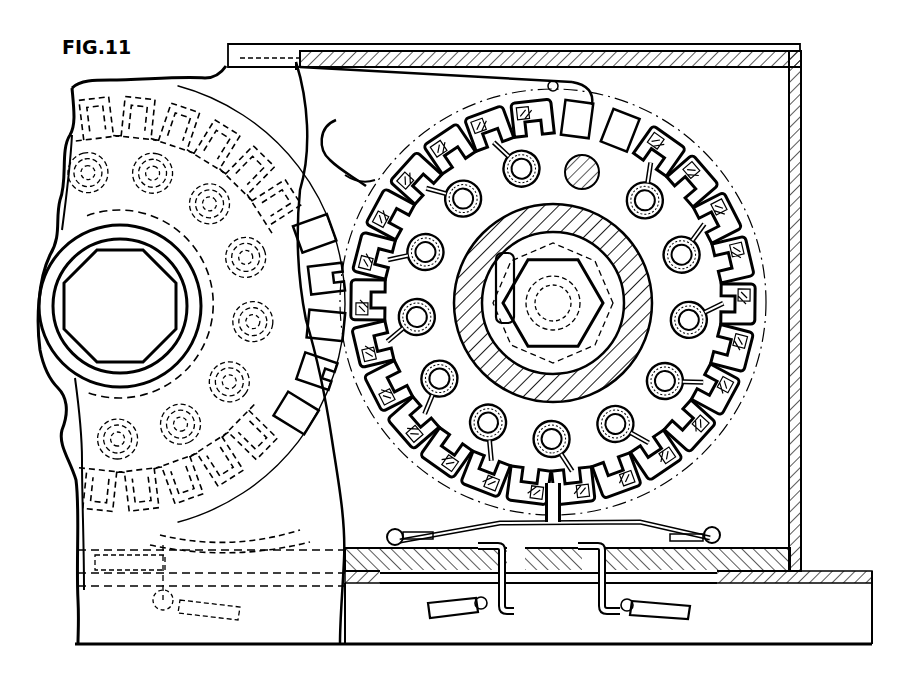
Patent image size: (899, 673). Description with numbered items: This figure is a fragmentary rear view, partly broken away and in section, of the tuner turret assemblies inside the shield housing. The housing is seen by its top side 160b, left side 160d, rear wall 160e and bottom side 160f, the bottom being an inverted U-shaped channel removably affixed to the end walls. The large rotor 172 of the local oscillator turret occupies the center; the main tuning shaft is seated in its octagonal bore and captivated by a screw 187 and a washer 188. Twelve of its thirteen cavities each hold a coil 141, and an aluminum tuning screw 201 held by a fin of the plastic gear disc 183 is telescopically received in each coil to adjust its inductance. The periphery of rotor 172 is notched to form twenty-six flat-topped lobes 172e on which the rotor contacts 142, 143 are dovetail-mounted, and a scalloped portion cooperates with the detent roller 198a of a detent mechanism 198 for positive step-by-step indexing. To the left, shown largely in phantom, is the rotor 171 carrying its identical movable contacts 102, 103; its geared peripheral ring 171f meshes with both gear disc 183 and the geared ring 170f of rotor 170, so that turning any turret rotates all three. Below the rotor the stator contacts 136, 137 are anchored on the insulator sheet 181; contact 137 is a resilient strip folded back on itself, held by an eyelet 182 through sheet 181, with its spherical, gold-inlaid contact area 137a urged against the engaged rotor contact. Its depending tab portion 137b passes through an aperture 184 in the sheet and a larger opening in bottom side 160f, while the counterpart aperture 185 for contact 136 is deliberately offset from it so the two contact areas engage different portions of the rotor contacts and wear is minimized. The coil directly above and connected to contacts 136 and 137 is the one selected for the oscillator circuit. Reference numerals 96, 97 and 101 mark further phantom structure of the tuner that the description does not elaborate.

The frame base 96 is at (78, 556).
The phantom lever 97 is at (203, 528).
The roller 101 is at (240, 196).
The movable contact 102 is at (282, 150).
The movable contact 103 is at (300, 182).
The stator contact 136 is at (462, 620).
The stator contact 137 is at (660, 600).
The contact area 137a is at (560, 620).
The depending tab portion 137b is at (645, 620).
The coil 141 is at (480, 197).
The rotor contact 142 is at (445, 128).
The rotor contact 143 is at (410, 172).
The top side 160b is at (680, 58).
The left side 160d is at (801, 430).
The rear wall 160e is at (306, 96).
The bottom side 160f is at (776, 585).
The rotor 170 is at (345, 656).
The peripheral ring 170f is at (332, 656).
The rotor 171 is at (250, 150).
The peripheral ring 171f is at (302, 412).
The rotor 172 is at (430, 170).
The lobes 172e is at (812, 250).
The insulator sheet 181 is at (801, 560).
The eyelet 182 is at (716, 528).
The plastic gear disc 183 is at (365, 183).
The aperture 184 is at (604, 614).
The aperture 185 is at (502, 614).
The screw 187 is at (588, 288).
The washer 188 is at (606, 326).
The detent mechanism 198 is at (435, 50).
The detent roller 198a is at (590, 80).
The tuning slug screw 201 is at (521, 150).